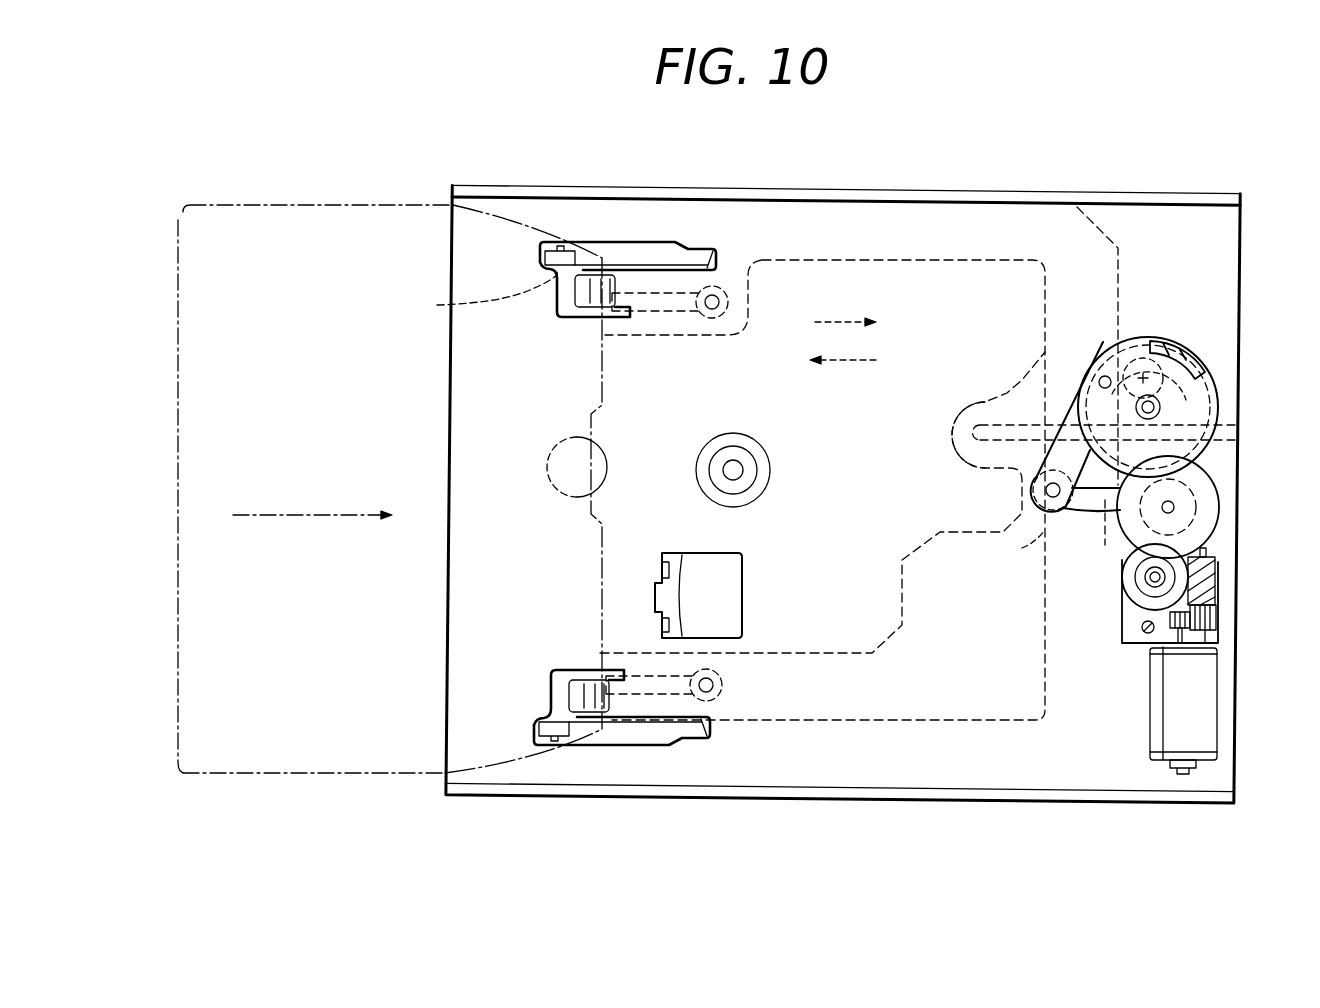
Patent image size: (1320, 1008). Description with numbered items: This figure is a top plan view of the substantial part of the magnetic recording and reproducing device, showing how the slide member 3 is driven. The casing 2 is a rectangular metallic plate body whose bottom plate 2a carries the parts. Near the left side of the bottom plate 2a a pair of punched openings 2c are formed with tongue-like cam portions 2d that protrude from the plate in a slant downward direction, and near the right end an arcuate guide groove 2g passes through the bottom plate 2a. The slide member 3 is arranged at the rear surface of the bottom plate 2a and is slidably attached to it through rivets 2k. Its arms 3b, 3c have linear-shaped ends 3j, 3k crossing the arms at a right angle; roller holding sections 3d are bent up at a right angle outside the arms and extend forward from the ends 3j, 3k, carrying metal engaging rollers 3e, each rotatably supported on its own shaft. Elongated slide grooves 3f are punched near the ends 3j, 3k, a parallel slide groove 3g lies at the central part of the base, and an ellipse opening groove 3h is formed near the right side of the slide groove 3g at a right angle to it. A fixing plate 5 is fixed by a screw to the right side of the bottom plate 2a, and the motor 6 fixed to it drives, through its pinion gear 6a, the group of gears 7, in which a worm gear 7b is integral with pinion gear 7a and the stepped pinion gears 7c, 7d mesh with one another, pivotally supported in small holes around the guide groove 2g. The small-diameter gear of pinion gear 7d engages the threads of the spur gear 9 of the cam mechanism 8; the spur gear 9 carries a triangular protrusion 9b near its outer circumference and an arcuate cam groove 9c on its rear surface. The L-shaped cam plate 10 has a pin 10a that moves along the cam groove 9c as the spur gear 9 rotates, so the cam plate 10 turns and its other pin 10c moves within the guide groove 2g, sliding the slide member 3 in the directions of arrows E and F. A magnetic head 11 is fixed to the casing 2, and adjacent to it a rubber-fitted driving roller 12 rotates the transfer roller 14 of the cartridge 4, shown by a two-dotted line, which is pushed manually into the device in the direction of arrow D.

The casing 2 is at (975, 801).
The bottom plate 2a is at (1050, 768).
The openings 2c is at (652, 242).
The cam portions 2d is at (577, 302).
The arcuate guide groove 2g is at (1110, 538).
The rivets 2k is at (713, 296).
The slide member 3 is at (1001, 242).
The arm 3b is at (866, 705).
The arm 3c is at (885, 220).
The roller holding sections 3d is at (592, 272).
The engaging rollers 3e is at (558, 246).
The slide grooves 3f is at (708, 262).
The slide groove 3g is at (992, 403).
The ellipse opening groove 3h is at (1022, 548).
The end 3j is at (480, 294).
The end 3k is at (585, 680).
The cartridge 4 is at (330, 257).
The fixing plate 5 is at (1128, 633).
The motor 6 is at (1198, 706).
The pinion gear 6a is at (1163, 647).
The group of gears 7 is at (1211, 541).
The pinion gear 7a is at (1218, 620).
The worm gear 7b is at (1218, 580).
The pinion gear 7c is at (1123, 585).
The pinion gear 7d is at (1218, 497).
The cam mechanism 8 is at (1214, 378).
The spur gear 9 is at (1211, 410).
The protrusion 9b is at (1200, 352).
The cam groove 9c is at (1238, 437).
The cam plate 10 is at (1056, 463).
The circular pin 10a is at (1143, 360).
The circular pin 10c is at (1046, 490).
The magnetic head 11 is at (724, 581).
The driving roller 12 is at (760, 468).
The transfer roller 14 is at (547, 468).
The arrow D is at (300, 515).
The arrow E is at (858, 322).
The arrow F is at (856, 360).